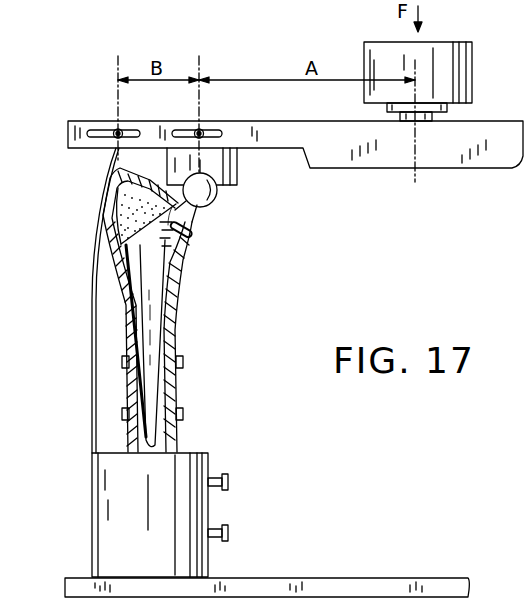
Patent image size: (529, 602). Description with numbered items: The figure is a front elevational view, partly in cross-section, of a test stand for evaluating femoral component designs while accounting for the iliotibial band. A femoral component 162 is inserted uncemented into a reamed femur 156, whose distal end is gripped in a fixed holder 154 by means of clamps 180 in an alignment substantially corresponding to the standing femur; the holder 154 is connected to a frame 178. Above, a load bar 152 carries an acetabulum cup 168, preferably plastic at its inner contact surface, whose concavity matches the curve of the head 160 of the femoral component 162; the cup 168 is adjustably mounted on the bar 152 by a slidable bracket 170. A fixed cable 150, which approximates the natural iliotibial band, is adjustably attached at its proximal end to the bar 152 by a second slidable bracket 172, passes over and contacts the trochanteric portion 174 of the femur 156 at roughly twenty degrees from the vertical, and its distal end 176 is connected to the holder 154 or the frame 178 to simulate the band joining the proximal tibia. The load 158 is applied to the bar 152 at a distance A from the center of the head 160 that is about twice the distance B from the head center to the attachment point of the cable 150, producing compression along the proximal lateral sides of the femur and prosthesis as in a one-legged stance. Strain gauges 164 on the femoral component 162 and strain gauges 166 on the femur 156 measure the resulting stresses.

The fixed cable 150 is at (92, 280).
The load bar 152 is at (135, 121).
The fixed holder 154 is at (208, 512).
The femur 156 is at (178, 288).
The load 158 is at (423, 14).
The head 160 is at (216, 203).
The femoral component 162 is at (155, 323).
The strain gauges 164 is at (136, 402).
The strain gauges 166 is at (183, 366).
The acetabulum cup 168 is at (238, 172).
The slidable bracket 170 is at (205, 125).
The slidable bracket 172 is at (114, 125).
The trochanteric portion 174 is at (100, 198).
The distal end of the cable 176 is at (97, 518).
The frame 178 is at (373, 578).
The clamps 180 is at (230, 482).